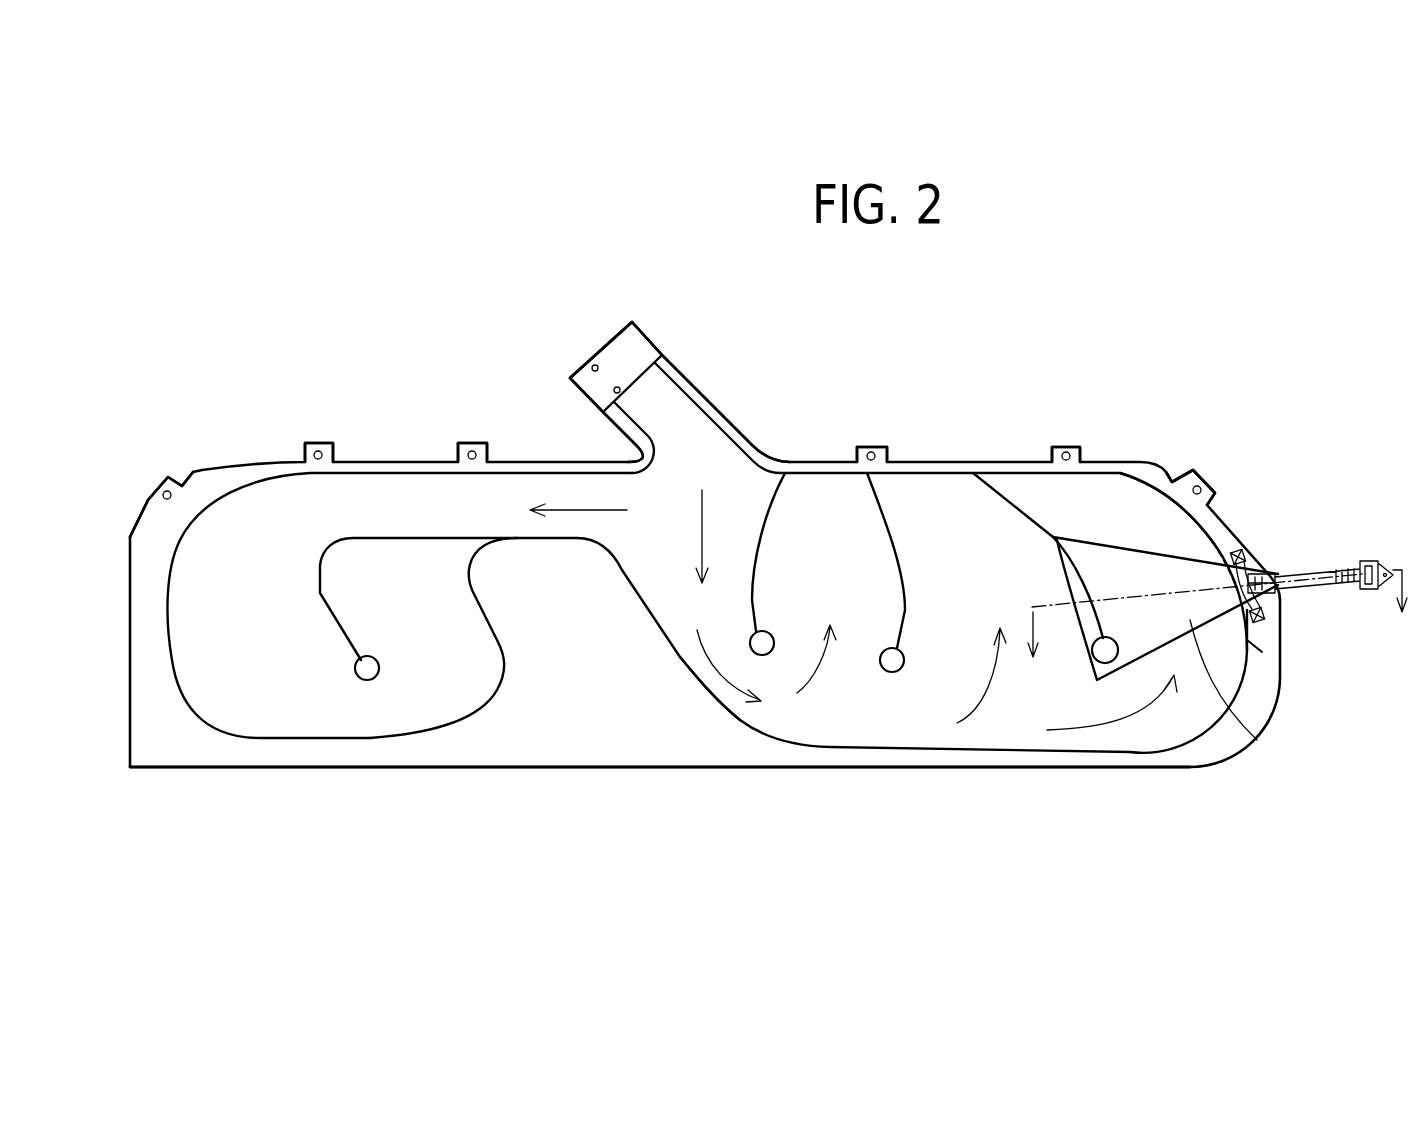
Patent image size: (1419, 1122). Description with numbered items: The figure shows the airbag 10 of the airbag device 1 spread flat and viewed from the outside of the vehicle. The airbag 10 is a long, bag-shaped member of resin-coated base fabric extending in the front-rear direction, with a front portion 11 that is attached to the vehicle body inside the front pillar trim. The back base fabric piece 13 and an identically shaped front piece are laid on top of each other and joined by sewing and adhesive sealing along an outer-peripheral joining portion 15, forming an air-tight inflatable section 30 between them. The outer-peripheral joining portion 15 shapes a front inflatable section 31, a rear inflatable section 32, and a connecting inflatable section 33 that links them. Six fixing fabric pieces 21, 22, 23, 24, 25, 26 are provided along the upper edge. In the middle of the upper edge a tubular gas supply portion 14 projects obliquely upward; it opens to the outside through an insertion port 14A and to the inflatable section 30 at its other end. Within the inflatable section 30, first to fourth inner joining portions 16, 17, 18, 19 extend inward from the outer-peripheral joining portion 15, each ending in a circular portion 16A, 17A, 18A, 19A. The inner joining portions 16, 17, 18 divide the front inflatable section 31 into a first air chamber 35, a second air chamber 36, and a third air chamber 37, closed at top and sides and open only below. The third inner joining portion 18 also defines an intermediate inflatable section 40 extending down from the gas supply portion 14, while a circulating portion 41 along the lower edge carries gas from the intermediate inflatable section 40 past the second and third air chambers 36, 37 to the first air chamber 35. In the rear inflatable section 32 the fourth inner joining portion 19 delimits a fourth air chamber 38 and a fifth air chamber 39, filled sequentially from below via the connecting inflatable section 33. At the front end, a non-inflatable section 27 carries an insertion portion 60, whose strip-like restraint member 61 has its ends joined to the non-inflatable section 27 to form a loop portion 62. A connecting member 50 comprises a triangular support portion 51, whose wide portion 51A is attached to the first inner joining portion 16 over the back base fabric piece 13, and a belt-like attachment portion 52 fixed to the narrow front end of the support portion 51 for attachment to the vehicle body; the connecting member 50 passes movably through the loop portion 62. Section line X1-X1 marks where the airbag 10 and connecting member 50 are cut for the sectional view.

The oil separator 1 is at (782, 318).
The airbag 10 is at (397, 437).
The front portion 11 is at (1198, 542).
The back base fabric piece 13 is at (557, 727).
The gas supply portion 14 is at (652, 398).
The insertion port 14A is at (643, 392).
The outer-peripheral joining portion 15 is at (720, 713).
The first inner joining portion 16 is at (1068, 587).
The circular portion 16A is at (1092, 670).
The second inner joining portion 17 is at (910, 567).
The circular portion 17A is at (910, 653).
The third inner joining portion 18 is at (760, 548).
The circular portion 18A is at (773, 633).
The fourth inner joining portion 19 is at (320, 567).
The circular portion 19A is at (355, 668).
The fixing fabric piece 21 is at (1214, 466).
The fixing fabric piece 22 is at (1066, 453).
The fixing fabric piece 23 is at (871, 453).
The fixing fabric piece 24 is at (472, 452).
The fixing fabric piece 25 is at (318, 452).
The fixing fabric piece 26 is at (160, 487).
The non-inflatable section 27 is at (1265, 648).
The inflatable section 30 is at (1262, 735).
The front inflatable section 31 is at (880, 717).
The rear inflatable section 32 is at (291, 513).
The connecting inflatable section 33 is at (570, 490).
The first air chamber 35 is at (1067, 510).
The second air chamber 36 is at (937, 513).
The third air chamber 37 is at (820, 510).
The fourth air chamber 38 is at (223, 642).
The fifth air chamber 39 is at (412, 617).
The intermediate inflatable section 40 is at (690, 605).
The circulating portion 41 is at (997, 723).
The connecting member 50 is at (1277, 668).
The support portion 51 is at (1162, 573).
The wide portion 51A is at (1110, 573).
The vehicle-body attachment portion 52 is at (1317, 570).
The insertion portion 60 is at (1256, 573).
The restraint member 61 is at (1262, 628).
The loop portion 62 is at (1263, 593).
The section line X1- X1 is at (1217, 613).